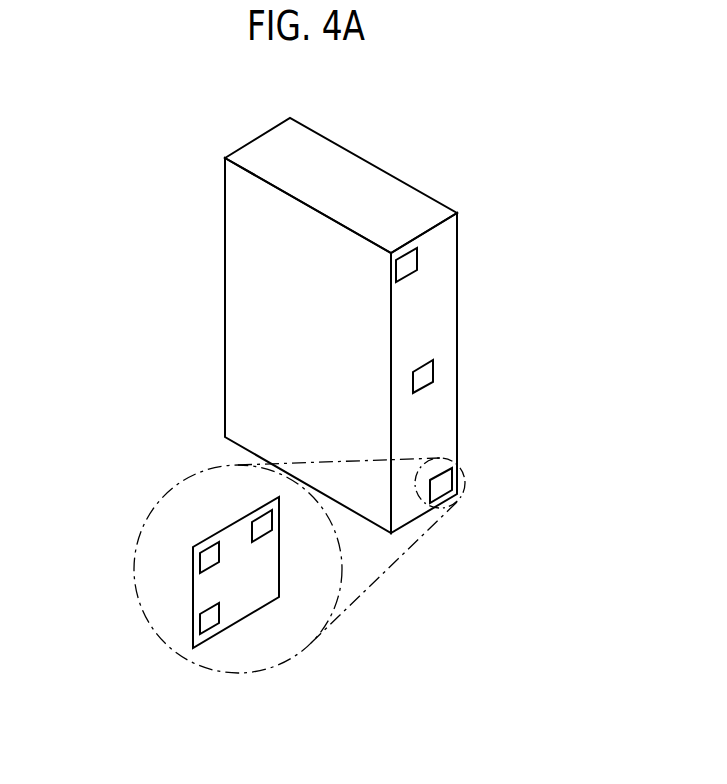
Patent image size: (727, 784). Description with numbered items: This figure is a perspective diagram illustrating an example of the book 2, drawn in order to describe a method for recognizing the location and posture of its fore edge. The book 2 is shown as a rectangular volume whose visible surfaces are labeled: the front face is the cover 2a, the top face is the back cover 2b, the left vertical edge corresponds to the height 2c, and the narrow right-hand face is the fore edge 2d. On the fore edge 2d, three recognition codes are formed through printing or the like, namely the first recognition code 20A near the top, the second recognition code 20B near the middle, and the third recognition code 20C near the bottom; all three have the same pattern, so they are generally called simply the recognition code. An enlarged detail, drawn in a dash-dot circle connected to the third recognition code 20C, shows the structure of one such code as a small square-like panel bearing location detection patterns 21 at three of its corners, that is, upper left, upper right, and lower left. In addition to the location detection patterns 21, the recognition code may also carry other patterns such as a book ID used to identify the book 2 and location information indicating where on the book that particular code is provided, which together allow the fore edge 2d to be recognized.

The book 2 is at (305, 403).
The cover 2a is at (242, 325).
The back cover 2b is at (340, 147).
The height 2c is at (224, 230).
The fore edge 2d is at (443, 310).
The first recognition code 20A is at (418, 258).
The second recognition code 20B is at (435, 370).
The third recognition code 20C is at (452, 483).
The location detection patterns 21 is at (253, 512).